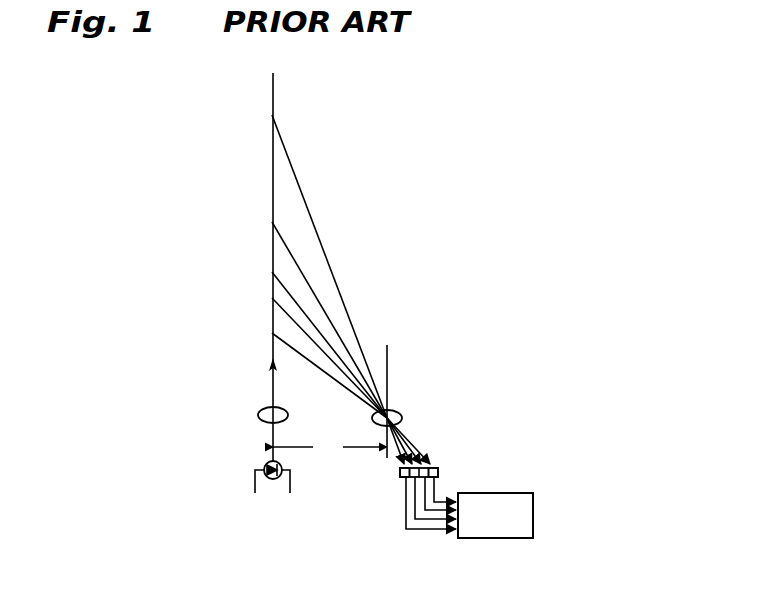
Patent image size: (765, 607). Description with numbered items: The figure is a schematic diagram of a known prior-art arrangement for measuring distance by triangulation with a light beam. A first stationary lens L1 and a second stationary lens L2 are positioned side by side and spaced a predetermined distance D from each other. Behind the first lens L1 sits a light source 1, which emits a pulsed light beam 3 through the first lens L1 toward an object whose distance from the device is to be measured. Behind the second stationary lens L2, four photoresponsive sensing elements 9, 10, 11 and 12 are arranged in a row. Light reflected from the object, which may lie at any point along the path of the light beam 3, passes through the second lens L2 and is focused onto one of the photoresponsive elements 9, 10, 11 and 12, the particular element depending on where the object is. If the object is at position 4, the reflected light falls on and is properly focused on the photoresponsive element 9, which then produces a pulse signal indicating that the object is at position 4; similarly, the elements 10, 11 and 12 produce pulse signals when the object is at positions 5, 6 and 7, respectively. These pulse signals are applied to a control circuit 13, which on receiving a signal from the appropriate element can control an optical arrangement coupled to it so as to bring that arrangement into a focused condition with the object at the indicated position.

The light source 1 is at (267, 463).
The pulsed light beam 3 is at (272, 333).
The object position 4 is at (272, 298).
The object position 5 is at (272, 272).
The object position 6 is at (272, 222).
The object position 7 is at (272, 115).
The photoresponsive sensing element 9 is at (438, 468).
The photoresponsive sensing element 10 is at (440, 482).
The photoresponsive sensing element 11 is at (410, 480).
The photoresponsive sensing element 12 is at (400, 470).
The control circuit 13 is at (505, 493).
The first stationary lens L1 is at (258, 414).
The second stationary lens L2 is at (402, 415).
The predetermined distance D is at (330, 447).